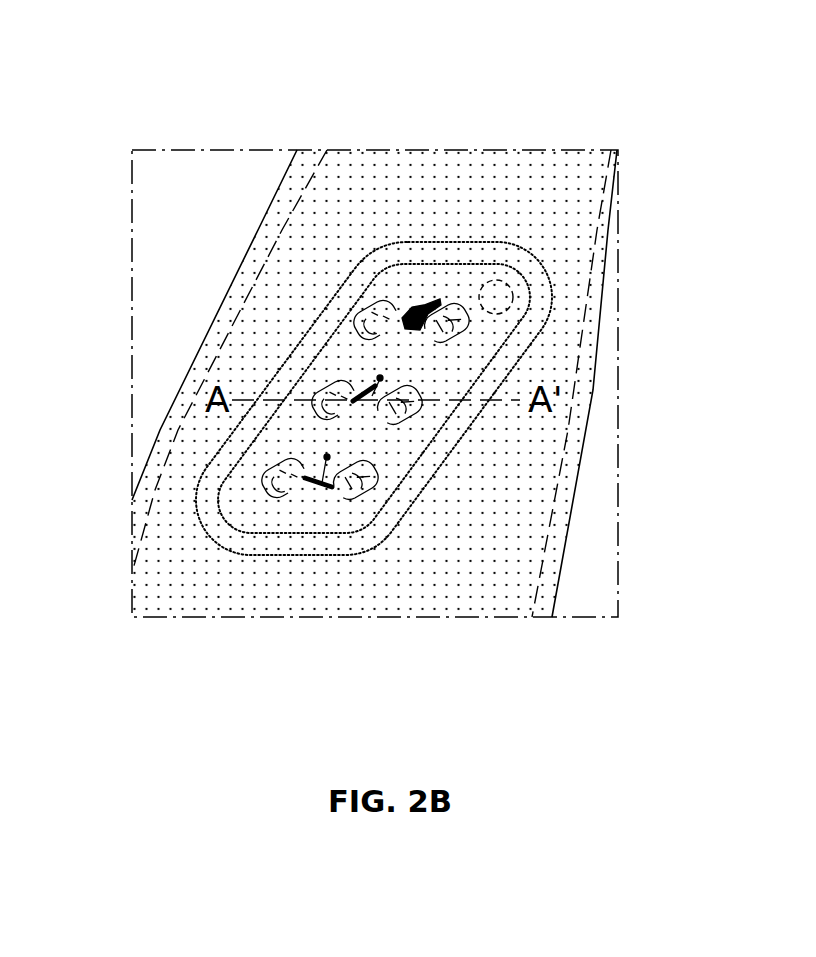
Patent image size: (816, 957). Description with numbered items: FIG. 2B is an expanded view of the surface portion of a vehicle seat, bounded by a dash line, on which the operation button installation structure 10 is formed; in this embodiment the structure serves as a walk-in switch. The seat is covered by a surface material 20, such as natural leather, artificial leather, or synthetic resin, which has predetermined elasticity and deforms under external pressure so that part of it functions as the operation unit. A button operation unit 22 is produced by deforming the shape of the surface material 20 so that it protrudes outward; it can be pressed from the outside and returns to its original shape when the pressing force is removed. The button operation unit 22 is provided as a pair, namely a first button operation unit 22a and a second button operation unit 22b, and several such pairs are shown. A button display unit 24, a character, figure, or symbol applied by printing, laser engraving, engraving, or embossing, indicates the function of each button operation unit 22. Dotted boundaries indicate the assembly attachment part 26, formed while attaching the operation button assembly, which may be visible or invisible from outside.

The operation button installation structure 10 is at (360, 570).
The surface material 20 is at (538, 298).
The button operation unit 22 is at (457, 273).
The first button operation unit 22a is at (385, 305).
The second button operation unit 22b is at (455, 303).
The button display unit 24 is at (413, 305).
The assembly attachment part 26 is at (290, 367).